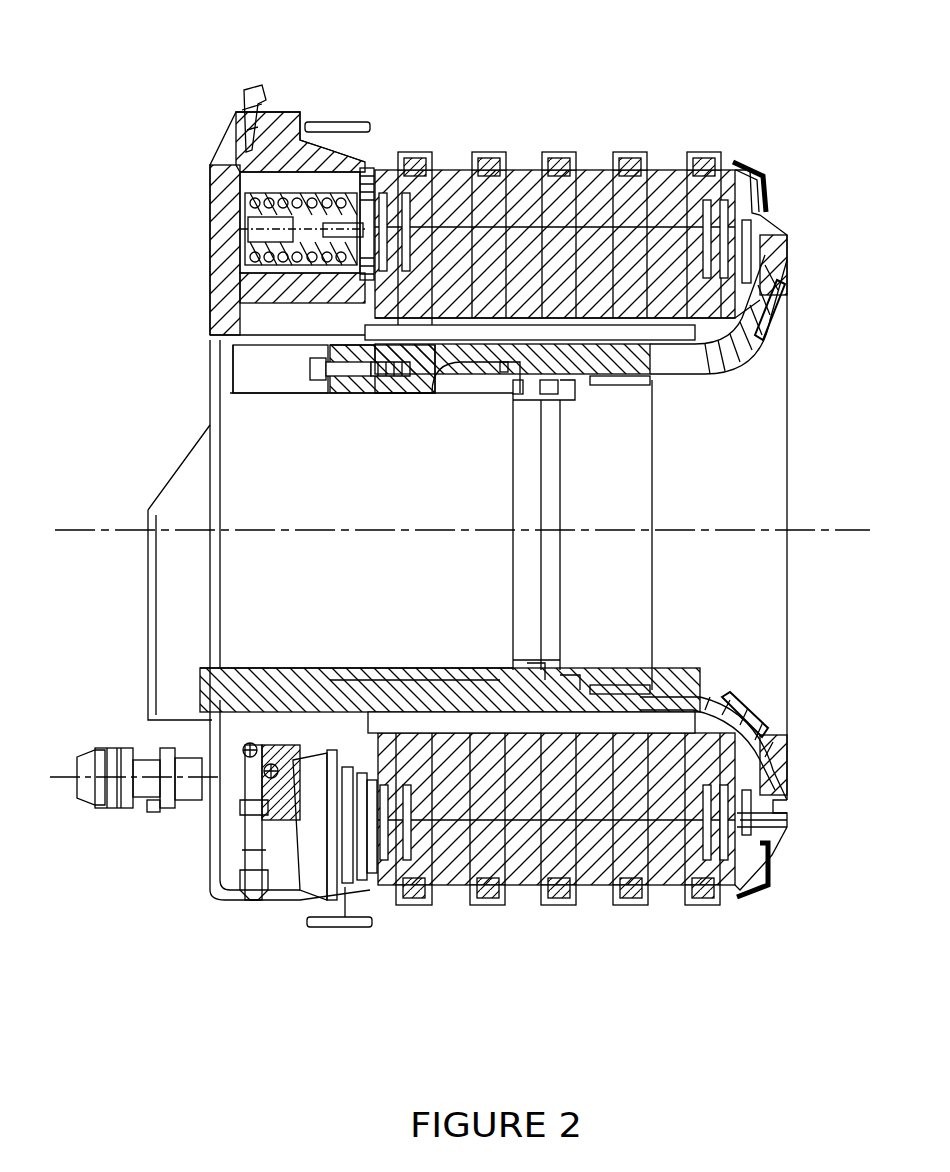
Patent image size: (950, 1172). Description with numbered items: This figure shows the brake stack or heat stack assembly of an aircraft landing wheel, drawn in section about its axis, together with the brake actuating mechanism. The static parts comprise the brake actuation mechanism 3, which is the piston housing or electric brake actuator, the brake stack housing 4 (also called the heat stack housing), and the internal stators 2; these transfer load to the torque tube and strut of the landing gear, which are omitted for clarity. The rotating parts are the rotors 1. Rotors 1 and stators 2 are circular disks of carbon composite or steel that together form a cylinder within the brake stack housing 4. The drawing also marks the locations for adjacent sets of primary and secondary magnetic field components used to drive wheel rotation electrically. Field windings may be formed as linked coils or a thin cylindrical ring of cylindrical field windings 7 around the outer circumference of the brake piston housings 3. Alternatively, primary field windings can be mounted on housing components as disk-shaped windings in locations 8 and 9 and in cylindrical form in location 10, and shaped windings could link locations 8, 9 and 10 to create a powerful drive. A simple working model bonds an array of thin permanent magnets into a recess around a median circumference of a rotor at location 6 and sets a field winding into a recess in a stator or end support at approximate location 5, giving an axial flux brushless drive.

The rotors 1 is at (701, 155).
The stators 2 is at (667, 185).
The brake actuation mechanism 3 is at (208, 224).
The brake stack housing 4 is at (712, 373).
The location for primary field windings on a stator 5 is at (388, 225).
The location for magnets on a rotor 6 is at (592, 227).
The cylindrical field windings 7 is at (335, 120).
The disk-shaped field winding location 8 is at (767, 173).
The disk-shaped field winding location 9 is at (773, 313).
The cylindrical field winding location 10 is at (622, 385).